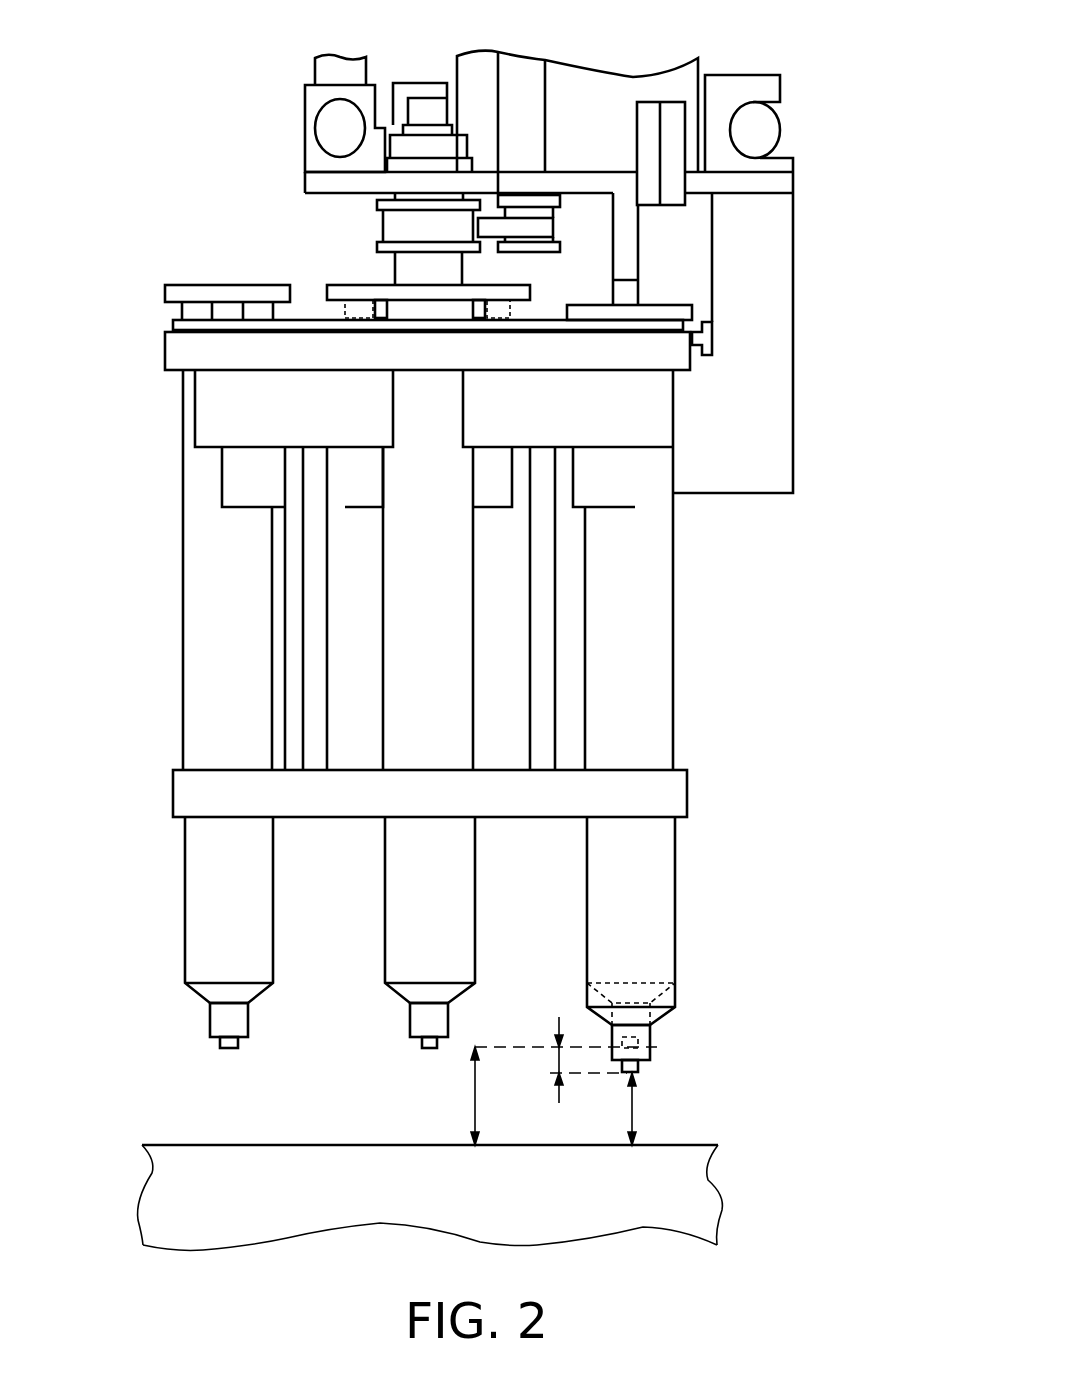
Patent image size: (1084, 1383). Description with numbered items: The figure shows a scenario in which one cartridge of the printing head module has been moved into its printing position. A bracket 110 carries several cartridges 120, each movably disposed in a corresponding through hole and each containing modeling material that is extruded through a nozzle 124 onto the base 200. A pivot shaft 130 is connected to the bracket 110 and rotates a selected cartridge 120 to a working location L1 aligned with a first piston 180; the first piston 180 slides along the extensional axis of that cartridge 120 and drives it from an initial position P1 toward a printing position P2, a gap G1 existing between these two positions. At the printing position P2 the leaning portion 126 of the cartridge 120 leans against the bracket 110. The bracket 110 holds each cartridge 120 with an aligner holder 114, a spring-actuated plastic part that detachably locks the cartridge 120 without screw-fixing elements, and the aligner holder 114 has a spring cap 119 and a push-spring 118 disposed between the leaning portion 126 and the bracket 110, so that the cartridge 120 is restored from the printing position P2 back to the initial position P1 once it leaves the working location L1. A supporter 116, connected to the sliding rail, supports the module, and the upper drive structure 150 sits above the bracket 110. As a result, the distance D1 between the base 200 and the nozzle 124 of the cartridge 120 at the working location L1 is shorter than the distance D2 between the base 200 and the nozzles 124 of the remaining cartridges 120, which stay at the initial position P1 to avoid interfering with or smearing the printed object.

The bracket 110 is at (150, 357).
The aligner holder 114 is at (615, 492).
The supporter 116 is at (767, 452).
The push-spring 118 is at (498, 300).
The spring cap 119 is at (498, 300).
The cartridge 120 is at (702, 577).
The nozzle 124 is at (228, 1017).
The leaning portion 126 is at (362, 290).
The pivot shaft 130 is at (387, 245).
The driving unit 150 is at (603, 105).
The first piston 180 is at (623, 293).
The base 200 is at (680, 1178).
The working location L1 is at (687, 742).
The initial position P1 is at (657, 1047).
The printing position P2 is at (638, 1073).
The distance D1 is at (650, 1109).
The distance D2 is at (455, 1096).
The gap G1 is at (550, 1062).